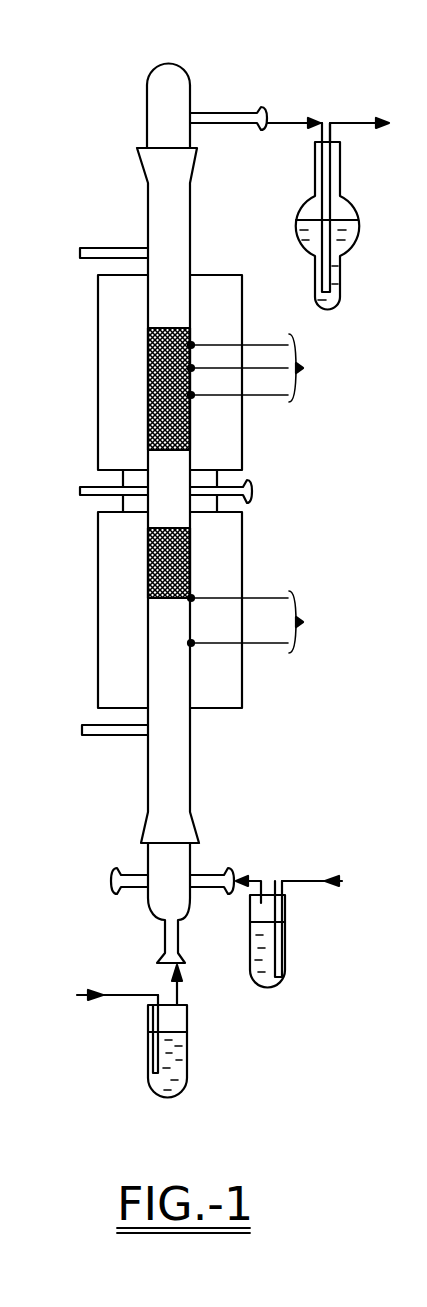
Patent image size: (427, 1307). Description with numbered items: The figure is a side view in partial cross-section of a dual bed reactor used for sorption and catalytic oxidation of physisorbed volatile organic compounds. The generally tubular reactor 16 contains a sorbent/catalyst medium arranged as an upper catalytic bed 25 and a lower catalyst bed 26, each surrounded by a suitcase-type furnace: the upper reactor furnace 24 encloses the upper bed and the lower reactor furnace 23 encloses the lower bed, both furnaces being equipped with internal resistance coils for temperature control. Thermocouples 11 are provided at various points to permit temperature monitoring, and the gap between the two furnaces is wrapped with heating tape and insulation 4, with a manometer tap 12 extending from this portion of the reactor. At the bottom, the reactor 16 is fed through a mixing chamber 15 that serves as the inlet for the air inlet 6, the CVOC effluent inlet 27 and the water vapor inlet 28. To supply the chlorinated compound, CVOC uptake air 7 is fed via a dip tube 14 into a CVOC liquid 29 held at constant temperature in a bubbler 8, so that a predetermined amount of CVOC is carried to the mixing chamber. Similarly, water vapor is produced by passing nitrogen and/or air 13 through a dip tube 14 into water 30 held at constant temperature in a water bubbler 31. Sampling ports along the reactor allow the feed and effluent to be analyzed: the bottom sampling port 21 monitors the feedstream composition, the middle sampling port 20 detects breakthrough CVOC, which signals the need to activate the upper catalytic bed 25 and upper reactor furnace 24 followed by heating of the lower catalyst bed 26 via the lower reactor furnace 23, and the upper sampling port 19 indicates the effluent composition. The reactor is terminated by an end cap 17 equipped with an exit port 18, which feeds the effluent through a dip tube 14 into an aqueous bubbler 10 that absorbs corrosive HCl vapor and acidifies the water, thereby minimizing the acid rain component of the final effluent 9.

The heating tape and insulation 4 is at (130, 478).
The air inlet 6 is at (112, 882).
The CVOC uptake air 7 is at (117, 995).
The bubbler 8 is at (147, 1090).
The final effluent 9 is at (357, 123).
The aqueous bubbler 10 is at (362, 220).
The thermocouples 11 is at (260, 493).
The manometer tap 12 is at (253, 491).
The nitrogen and/or air 13 is at (320, 880).
The dip tube 14 is at (316, 182).
The mixing chamber 15 is at (157, 867).
The reactor 16 is at (200, 767).
The end cap 17 is at (163, 70).
The exit port 18 is at (223, 113).
The upper sampling port 19 is at (90, 248).
The middle sampling port 20 is at (90, 496).
The bottom sampling port 21 is at (85, 735).
The lower reactor furnace 23 is at (107, 617).
The upper reactor furnace 24 is at (106, 344).
The upper catalytic bed 25 is at (196, 421).
The lower catalyst bed 26 is at (197, 567).
The CVOC effluent inlet 27 is at (182, 962).
The water vapor inlet 28 is at (220, 873).
The CVOC liquid 29 is at (178, 1076).
The water 30 is at (285, 955).
The water bubbler 31 is at (281, 995).